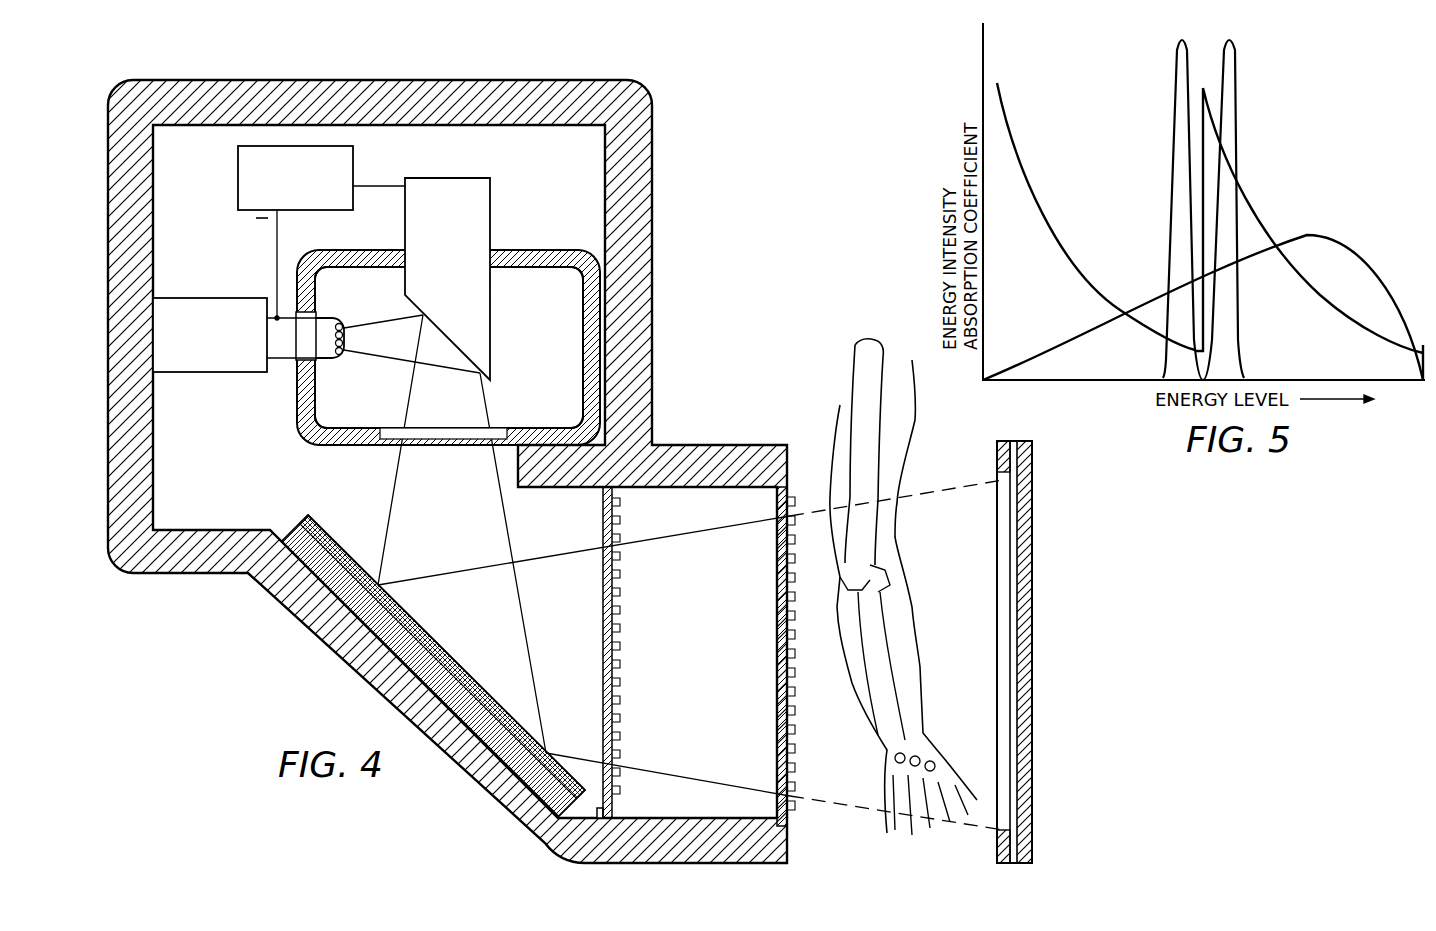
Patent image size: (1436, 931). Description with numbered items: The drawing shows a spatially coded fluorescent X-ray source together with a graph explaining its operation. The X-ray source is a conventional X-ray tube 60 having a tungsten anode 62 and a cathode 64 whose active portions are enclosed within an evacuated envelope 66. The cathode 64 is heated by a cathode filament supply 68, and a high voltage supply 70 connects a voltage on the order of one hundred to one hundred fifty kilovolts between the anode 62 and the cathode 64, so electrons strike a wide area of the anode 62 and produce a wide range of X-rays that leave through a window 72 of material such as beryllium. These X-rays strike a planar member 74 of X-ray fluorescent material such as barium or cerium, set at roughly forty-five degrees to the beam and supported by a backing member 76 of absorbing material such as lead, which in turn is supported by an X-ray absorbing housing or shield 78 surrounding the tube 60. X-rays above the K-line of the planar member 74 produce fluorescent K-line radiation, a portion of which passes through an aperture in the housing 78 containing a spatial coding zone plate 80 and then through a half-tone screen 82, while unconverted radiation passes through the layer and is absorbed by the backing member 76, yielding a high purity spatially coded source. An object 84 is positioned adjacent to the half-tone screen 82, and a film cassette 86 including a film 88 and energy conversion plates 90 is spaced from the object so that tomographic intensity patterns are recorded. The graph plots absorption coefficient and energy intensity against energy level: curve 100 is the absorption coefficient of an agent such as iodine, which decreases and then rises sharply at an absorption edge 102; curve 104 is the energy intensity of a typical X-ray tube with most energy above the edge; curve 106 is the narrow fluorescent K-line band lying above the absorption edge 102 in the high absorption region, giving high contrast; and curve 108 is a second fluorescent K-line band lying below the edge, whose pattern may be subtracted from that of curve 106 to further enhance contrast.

In FIG. 4, the X-ray tube 60 is at (540, 242).
In FIG. 4, the anode 62 is at (490, 184).
In FIG. 4, the cathode 64 is at (344, 322).
In FIG. 4, the evacuated envelope 66 is at (300, 432).
In FIG. 4, the cathode filament supply 68 is at (225, 300).
In FIG. 4, the high voltage supply 70 is at (356, 172).
In FIG. 4, the window 72 is at (470, 446).
In FIG. 4, the planar member 74 is at (343, 542).
In FIG. 4, the backing member 76 is at (294, 526).
In FIG. 4, the housing or shield 78 is at (457, 786).
In FIG. 4, the spatial coding zone plate 80 is at (603, 525).
In FIG. 4, the half-tone screen 82 is at (778, 546).
In FIG. 4, the object 84 is at (897, 475).
In FIG. 4, the film cassette 86 is at (1047, 504).
In FIG. 4, the film 88 is at (1013, 638).
In FIG. 4, the energy conversion plates 90 is at (1020, 537).
In FIG. 5, the absorption coefficient curve 100 is at (1260, 215).
In FIG. 5, the absorption edge 102 is at (1203, 320).
In FIG. 5, the energy intensity curve 104 is at (1358, 247).
In FIG. 5, the fluorescent K-line curve 106 is at (1237, 90).
In FIG. 5, the second fluorescent K-line curve 108 is at (1175, 68).